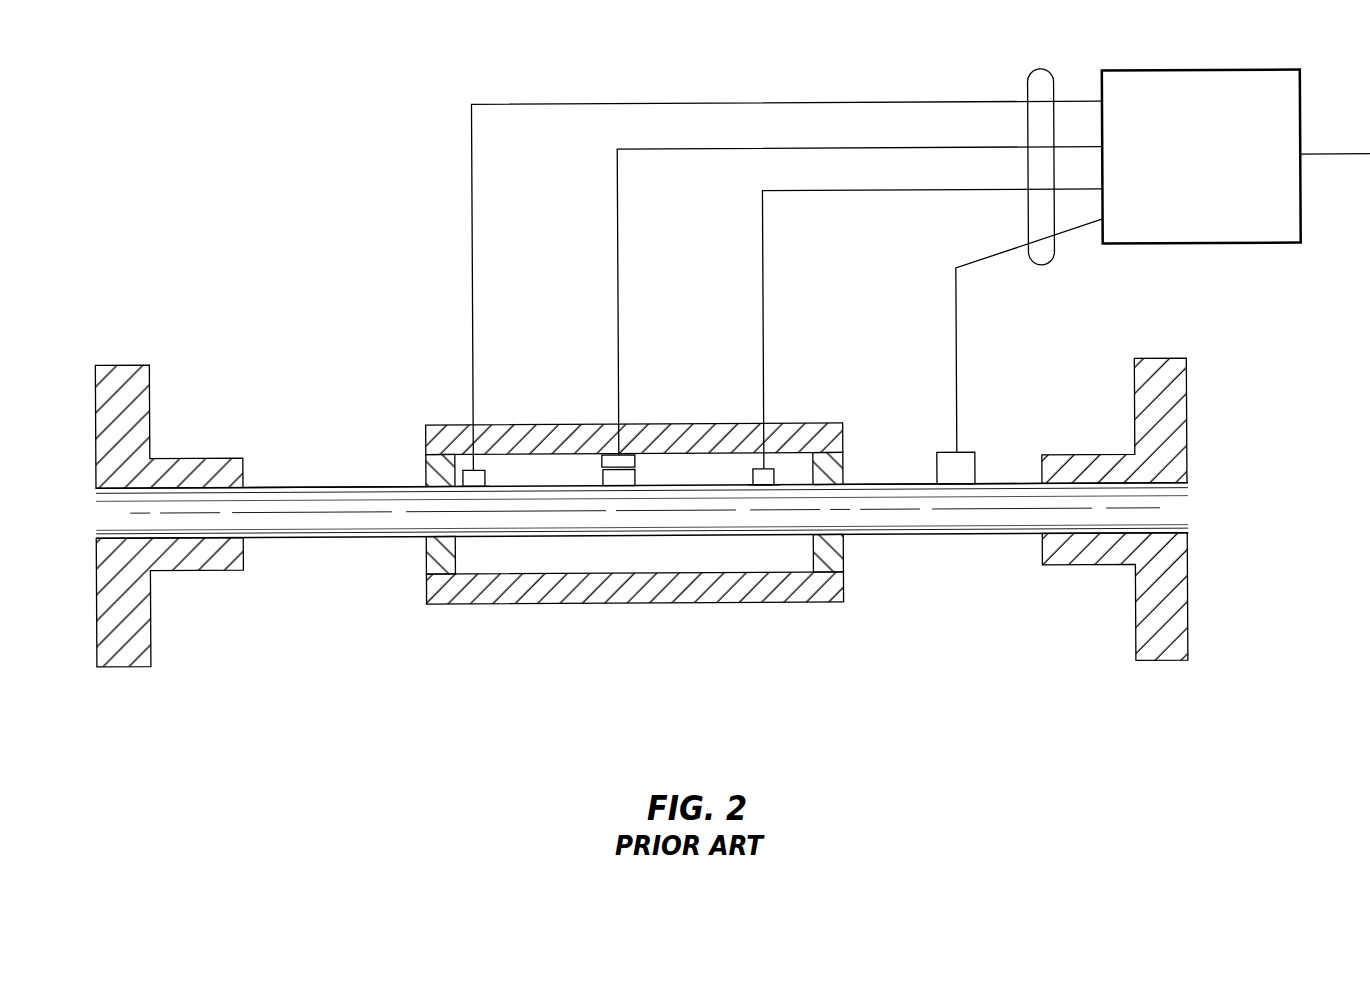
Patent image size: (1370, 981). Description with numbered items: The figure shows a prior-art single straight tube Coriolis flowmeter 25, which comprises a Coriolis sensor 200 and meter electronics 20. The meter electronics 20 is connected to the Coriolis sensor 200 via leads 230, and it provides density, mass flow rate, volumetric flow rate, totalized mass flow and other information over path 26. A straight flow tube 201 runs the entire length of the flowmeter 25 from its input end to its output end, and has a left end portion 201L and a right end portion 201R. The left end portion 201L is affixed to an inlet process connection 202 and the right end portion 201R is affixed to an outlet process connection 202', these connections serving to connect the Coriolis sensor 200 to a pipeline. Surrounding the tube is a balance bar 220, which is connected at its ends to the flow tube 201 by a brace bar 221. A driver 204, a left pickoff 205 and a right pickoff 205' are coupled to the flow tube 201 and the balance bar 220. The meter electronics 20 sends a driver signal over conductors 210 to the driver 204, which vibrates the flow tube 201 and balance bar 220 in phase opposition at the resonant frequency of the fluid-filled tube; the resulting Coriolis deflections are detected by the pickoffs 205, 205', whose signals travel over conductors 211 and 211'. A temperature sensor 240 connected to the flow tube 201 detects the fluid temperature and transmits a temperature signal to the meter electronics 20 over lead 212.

The Coriolis flowmeter 25 is at (194, 195).
The Coriolis sensor 200 is at (311, 277).
The flow tube 201 is at (340, 486).
The left end portion 201L is at (258, 486).
The right end portion 201R is at (1003, 486).
The inlet process connection 202 is at (169, 506).
The outlet process connection 202' is at (1112, 504).
The driver 204 is at (630, 460).
The left pickoff 205 is at (452, 434).
The right pickoff 205' is at (835, 464).
The conductors 210 is at (835, 149).
The conductors 211 is at (787, 249).
The conductors 211' is at (932, 329).
The lead 212 is at (1072, 232).
The balance bar 220 is at (820, 424).
The brace bar 221 is at (426, 551).
The leads 230 is at (1041, 71).
The temperature sensor 240 is at (945, 454).
The meter electronics 20 is at (1192, 224).
The path 26 is at (1363, 156).